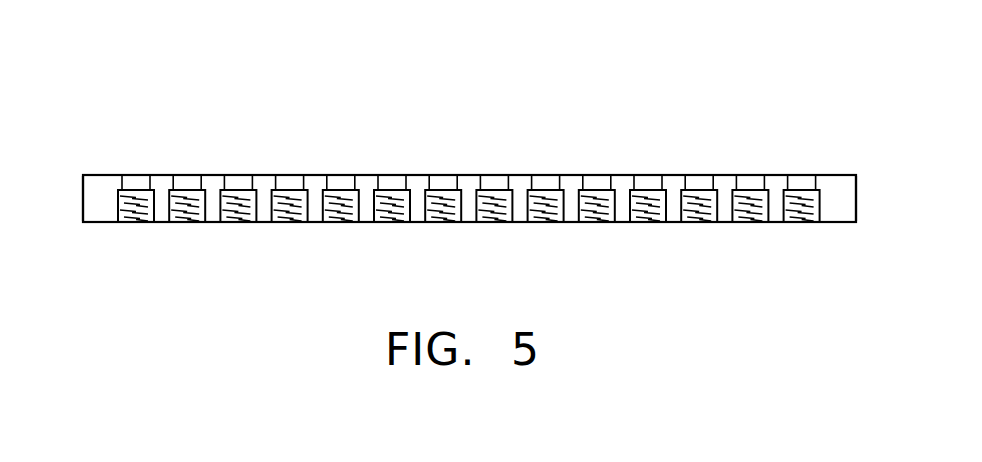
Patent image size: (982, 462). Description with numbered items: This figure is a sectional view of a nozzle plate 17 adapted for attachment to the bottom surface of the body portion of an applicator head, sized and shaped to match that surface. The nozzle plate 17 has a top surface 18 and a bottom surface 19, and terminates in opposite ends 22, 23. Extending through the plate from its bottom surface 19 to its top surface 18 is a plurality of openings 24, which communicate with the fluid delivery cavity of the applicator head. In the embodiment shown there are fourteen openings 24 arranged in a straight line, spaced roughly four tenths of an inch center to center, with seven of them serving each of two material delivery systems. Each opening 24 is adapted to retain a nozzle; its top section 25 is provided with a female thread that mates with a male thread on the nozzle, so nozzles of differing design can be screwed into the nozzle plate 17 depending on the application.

The nozzle plate 17 is at (464, 157).
The top surface 18 is at (571, 182).
The bottom surface 19 is at (522, 225).
The end 22 is at (83, 205).
The end 23 is at (857, 207).
The opening 24 is at (342, 182).
The top section 25 is at (335, 212).